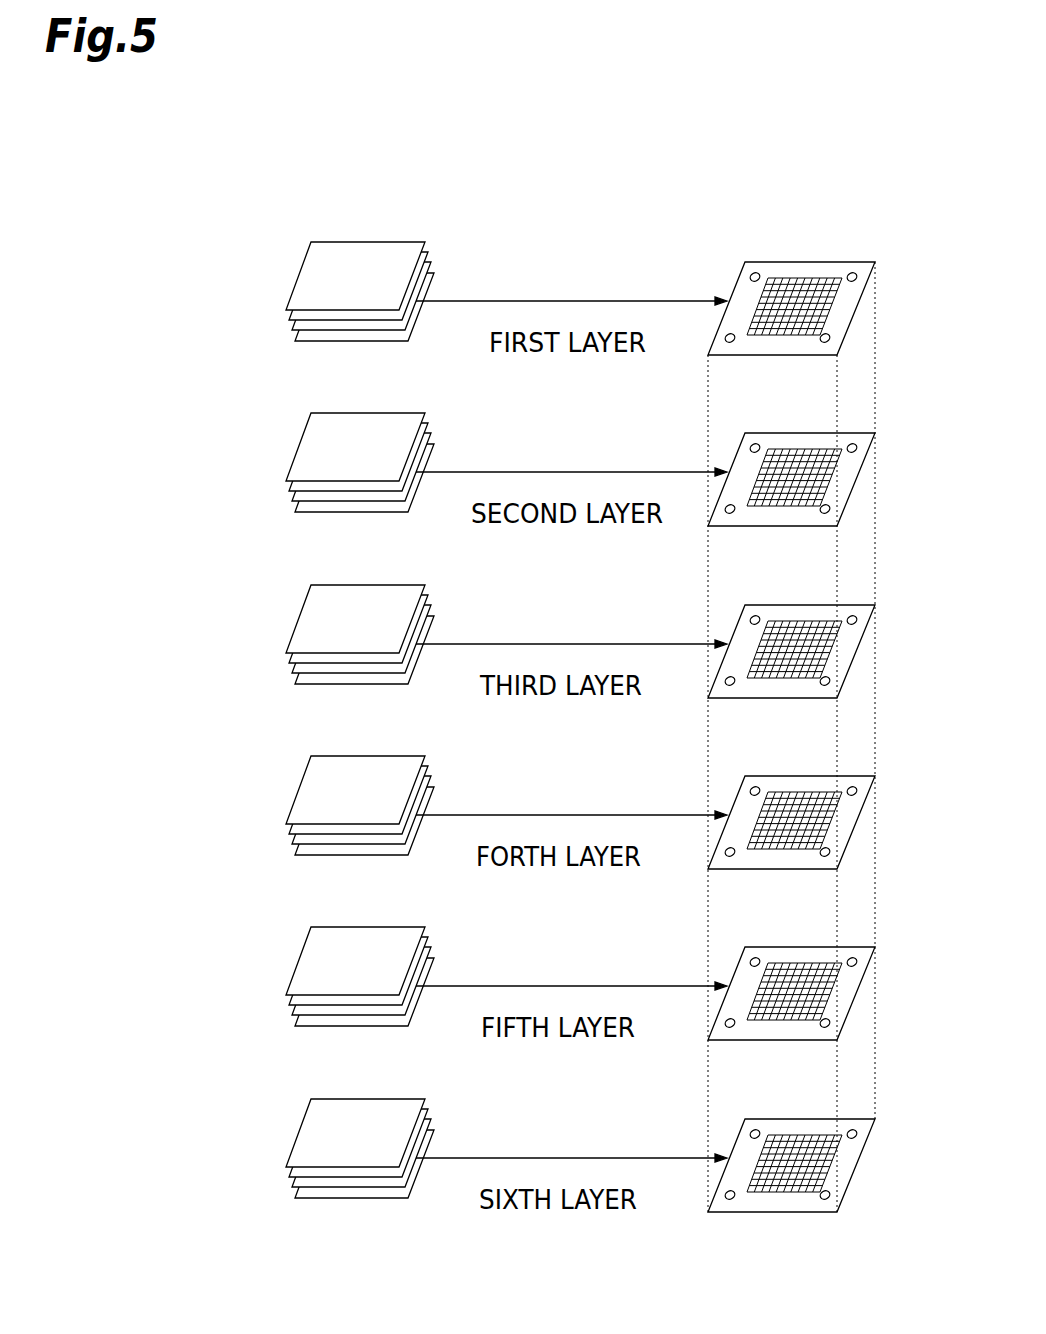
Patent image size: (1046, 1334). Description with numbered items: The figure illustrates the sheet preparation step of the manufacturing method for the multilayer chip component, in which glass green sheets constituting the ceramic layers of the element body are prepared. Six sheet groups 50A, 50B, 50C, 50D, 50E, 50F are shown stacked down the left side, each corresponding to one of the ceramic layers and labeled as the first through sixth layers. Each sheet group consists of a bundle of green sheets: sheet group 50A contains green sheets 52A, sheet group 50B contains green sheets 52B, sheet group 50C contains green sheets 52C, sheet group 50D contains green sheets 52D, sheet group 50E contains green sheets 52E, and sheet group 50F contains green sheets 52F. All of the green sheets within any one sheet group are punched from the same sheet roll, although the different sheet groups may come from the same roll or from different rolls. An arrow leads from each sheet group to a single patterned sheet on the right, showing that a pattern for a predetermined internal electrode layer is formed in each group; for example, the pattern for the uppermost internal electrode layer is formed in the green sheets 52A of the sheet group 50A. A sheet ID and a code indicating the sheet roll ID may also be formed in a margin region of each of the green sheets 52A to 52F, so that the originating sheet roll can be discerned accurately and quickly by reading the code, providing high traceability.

The sheet group 50A is at (158, 217).
The sheet group 50B is at (260, 451).
The sheet group 50C is at (260, 623).
The sheet group 50D is at (260, 794).
The sheet group 50E is at (260, 965).
The sheet group 50F is at (260, 1137).
The green sheet 52A is at (308, 293).
The green sheet 52B is at (560, 458).
The green sheet 52C is at (560, 630).
The green sheet 52D is at (560, 801).
The green sheet 52E is at (560, 972).
The green sheet 52F is at (560, 1144).